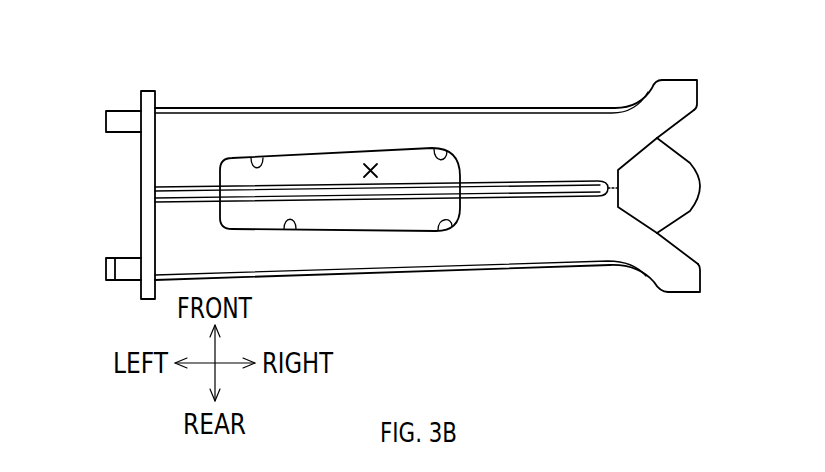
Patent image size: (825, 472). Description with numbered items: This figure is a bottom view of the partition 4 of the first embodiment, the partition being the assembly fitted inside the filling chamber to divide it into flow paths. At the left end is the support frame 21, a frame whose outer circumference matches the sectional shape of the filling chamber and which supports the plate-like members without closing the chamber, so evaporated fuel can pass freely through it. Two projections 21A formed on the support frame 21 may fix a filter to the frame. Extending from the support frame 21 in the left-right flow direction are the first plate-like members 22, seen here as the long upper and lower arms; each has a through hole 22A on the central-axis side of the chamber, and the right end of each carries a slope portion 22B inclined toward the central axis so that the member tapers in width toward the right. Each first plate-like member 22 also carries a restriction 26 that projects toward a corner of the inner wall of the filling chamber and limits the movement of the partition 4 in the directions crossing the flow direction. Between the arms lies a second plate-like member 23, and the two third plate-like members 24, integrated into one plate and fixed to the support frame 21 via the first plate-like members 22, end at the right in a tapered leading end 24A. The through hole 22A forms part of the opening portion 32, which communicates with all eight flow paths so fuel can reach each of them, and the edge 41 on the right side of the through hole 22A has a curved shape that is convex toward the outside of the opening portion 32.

The partition 4 is at (718, 98).
The support frame 21 is at (147, 100).
The projections 21A is at (113, 121).
The first plate-like members 22 is at (508, 135).
The through hole 22A is at (253, 166).
The slope portion 22B is at (680, 123).
The second plate-like members 23 is at (297, 190).
The third plate-like members 24 is at (663, 171).
The tapered leading end 24A is at (683, 185).
The restriction 26 is at (678, 93).
The opening portion 32 is at (371, 164).
The edge 41 is at (441, 160).